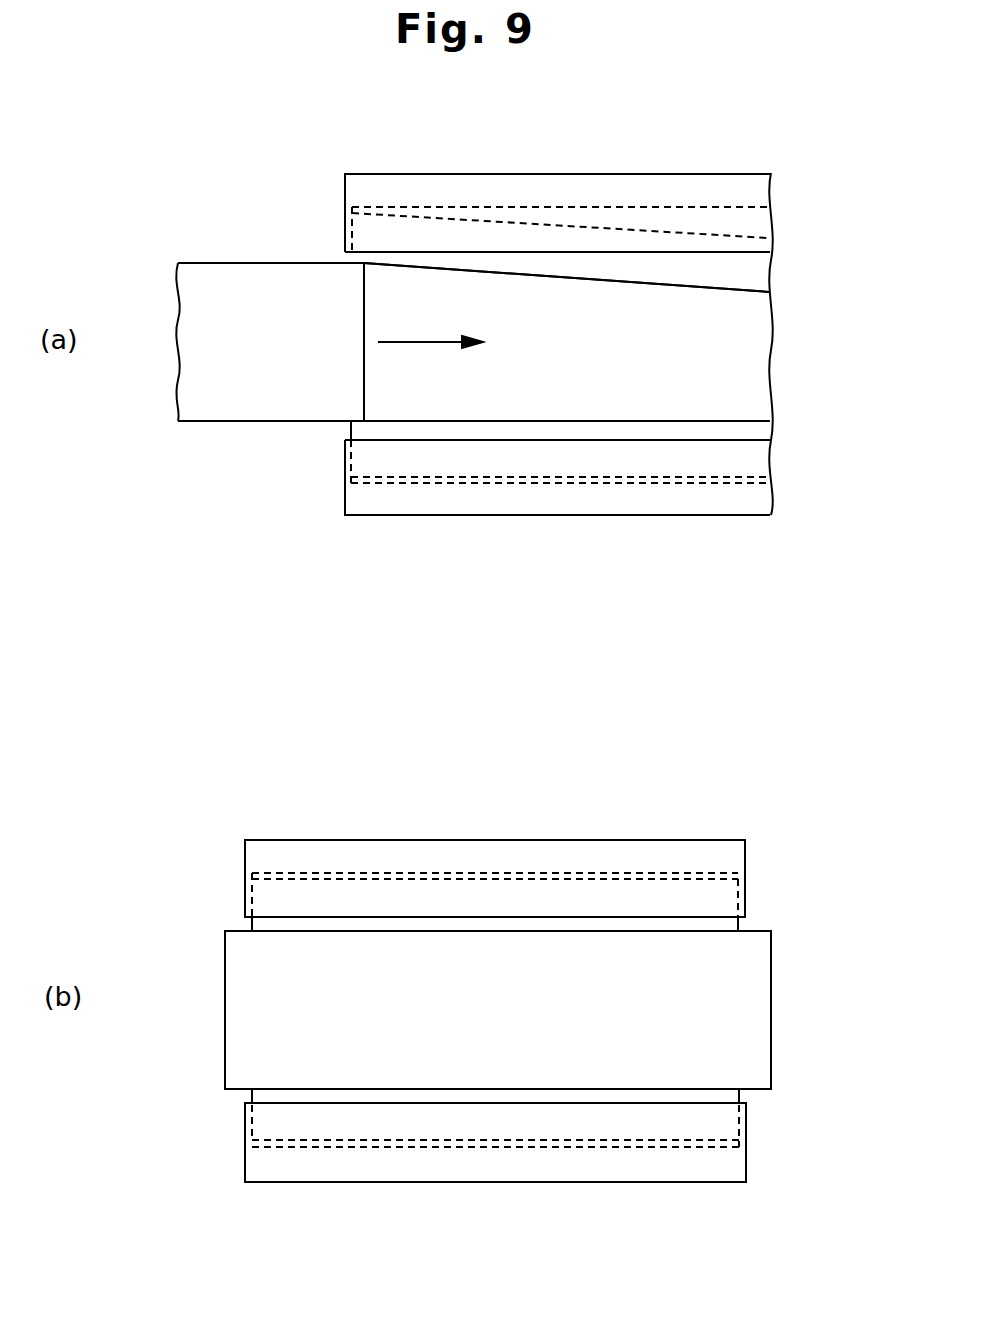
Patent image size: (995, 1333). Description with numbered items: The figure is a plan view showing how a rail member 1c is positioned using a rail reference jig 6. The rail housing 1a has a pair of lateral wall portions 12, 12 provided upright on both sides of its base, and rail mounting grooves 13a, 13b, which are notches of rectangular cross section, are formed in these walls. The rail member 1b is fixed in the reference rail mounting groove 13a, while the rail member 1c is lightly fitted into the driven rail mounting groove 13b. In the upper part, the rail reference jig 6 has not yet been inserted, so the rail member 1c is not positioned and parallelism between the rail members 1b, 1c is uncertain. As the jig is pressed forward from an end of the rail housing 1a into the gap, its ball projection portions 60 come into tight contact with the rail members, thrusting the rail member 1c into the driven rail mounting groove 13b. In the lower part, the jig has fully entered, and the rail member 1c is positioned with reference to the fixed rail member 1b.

The rail housing 1a is at (753, 370).
The rail member 1b is at (728, 433).
The rail member 1c is at (728, 280).
The rail reference jig 6 is at (250, 407).
The ball projection portion 60 is at (250, 262).
The lateral wall portion 12 is at (528, 173).
The reference rail mounting groove 13a is at (726, 486).
The driven rail mounting groove 13b is at (714, 205).